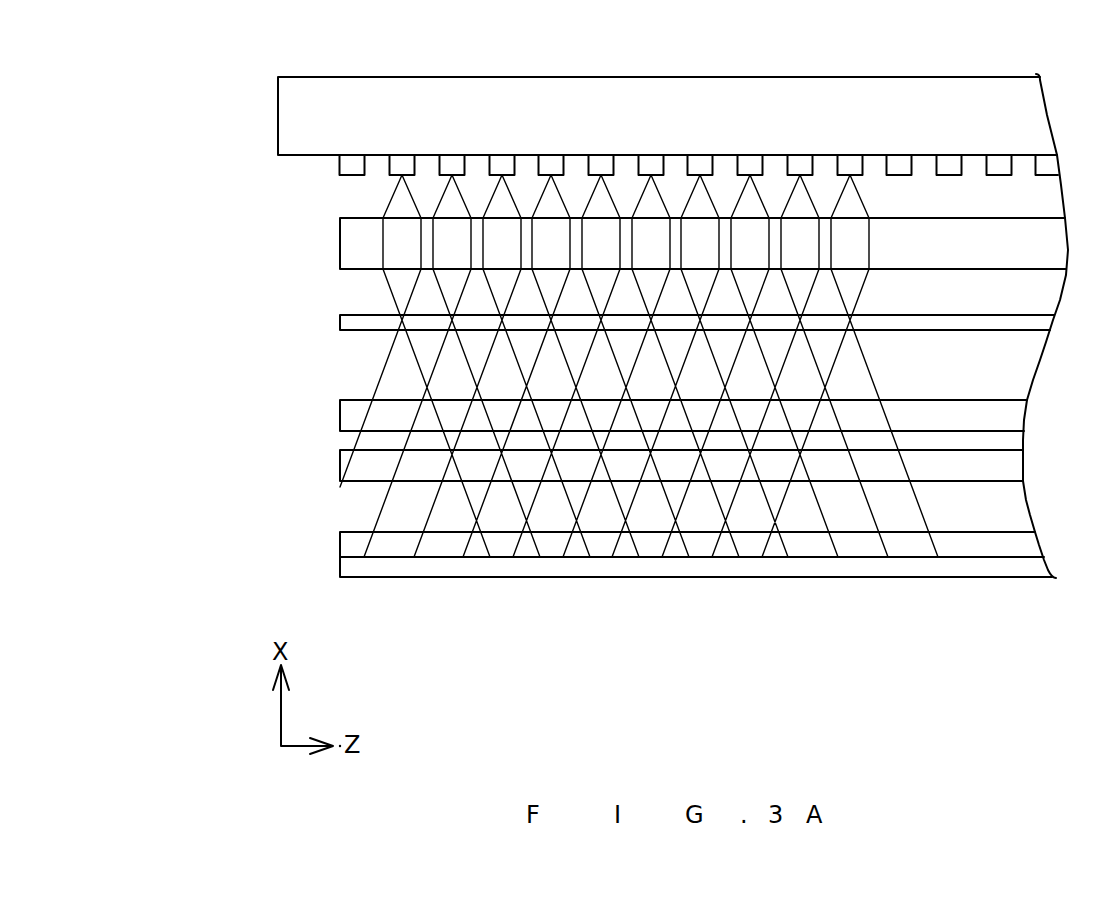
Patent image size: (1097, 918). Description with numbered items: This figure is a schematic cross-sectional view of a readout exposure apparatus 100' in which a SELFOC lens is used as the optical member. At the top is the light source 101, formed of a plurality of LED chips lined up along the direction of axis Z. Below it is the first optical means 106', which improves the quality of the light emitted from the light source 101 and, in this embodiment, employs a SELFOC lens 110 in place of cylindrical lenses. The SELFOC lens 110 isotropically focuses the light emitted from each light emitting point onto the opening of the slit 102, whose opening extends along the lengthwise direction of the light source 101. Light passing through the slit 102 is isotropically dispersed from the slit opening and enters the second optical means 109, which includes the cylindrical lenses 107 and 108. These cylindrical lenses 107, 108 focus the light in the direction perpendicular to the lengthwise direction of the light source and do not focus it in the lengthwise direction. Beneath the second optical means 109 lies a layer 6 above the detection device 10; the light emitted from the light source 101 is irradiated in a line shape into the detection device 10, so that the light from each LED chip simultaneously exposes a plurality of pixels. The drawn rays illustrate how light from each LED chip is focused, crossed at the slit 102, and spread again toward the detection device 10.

The readout exposure apparatus 100' is at (604, 324).
The light source 101 is at (278, 117).
The first optical means 106' is at (642, 252).
The SELFOC lens 110 is at (340, 257).
The slit 102 is at (340, 323).
The second optical means 109 is at (280, 393).
The cylindrical lens 107 is at (340, 418).
The cylindrical lens 108 is at (340, 473).
The substrate 6 is at (340, 550).
The detection device 10 is at (340, 572).